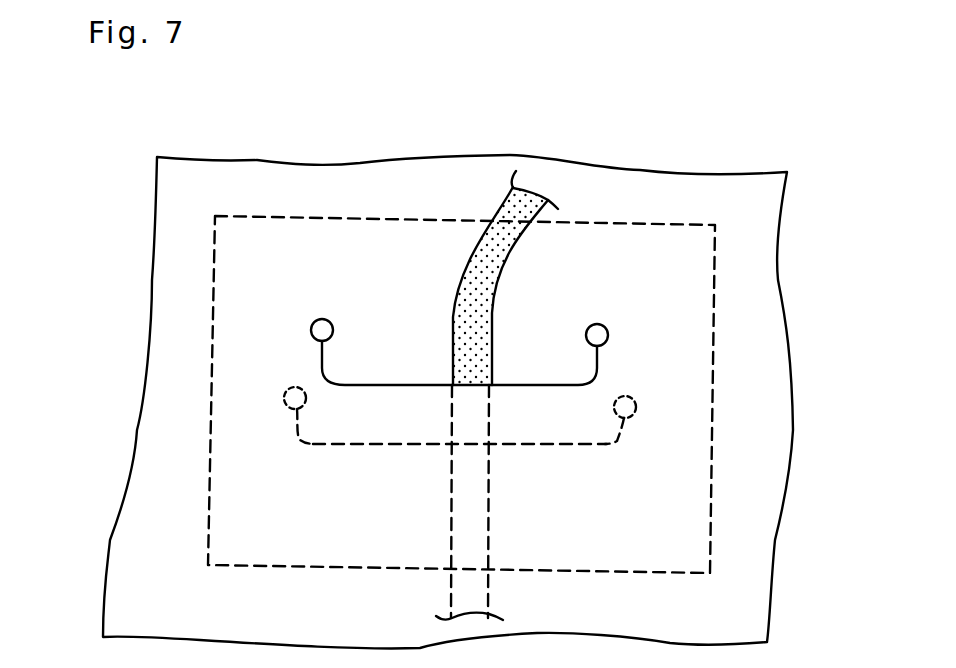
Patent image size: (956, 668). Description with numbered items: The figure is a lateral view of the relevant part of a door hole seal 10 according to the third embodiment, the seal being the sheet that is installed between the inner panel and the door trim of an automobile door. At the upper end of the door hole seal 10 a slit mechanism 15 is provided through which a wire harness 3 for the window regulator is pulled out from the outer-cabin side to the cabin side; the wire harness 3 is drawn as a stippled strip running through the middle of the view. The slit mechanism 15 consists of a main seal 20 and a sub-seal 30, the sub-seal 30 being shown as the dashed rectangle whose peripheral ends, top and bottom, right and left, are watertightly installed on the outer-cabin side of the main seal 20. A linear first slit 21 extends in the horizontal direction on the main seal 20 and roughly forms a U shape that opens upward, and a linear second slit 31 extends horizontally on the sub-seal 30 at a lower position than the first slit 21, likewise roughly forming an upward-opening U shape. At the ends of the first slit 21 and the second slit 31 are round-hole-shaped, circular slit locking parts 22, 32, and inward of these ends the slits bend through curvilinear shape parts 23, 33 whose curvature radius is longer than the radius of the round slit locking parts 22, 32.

The door hole seal 10 is at (652, 162).
The main seal 20 is at (372, 187).
The slit mechanism 15 is at (592, 208).
The sub-seal 30 is at (312, 247).
The wire harness 3 is at (463, 292).
The first slit 21 is at (393, 384).
The slit locking part 22 is at (312, 322).
The curvilinear shape part 23 is at (332, 382).
The second slit 31 is at (420, 445).
The slit locking part 32 is at (287, 404).
The curvilinear shape part 33 is at (300, 443).